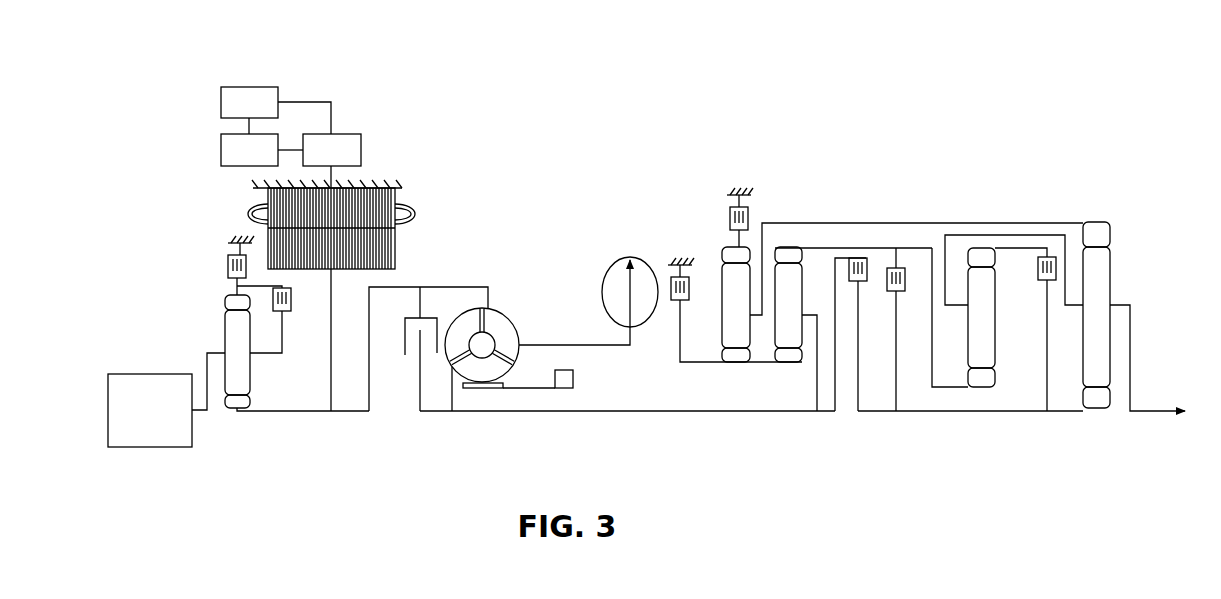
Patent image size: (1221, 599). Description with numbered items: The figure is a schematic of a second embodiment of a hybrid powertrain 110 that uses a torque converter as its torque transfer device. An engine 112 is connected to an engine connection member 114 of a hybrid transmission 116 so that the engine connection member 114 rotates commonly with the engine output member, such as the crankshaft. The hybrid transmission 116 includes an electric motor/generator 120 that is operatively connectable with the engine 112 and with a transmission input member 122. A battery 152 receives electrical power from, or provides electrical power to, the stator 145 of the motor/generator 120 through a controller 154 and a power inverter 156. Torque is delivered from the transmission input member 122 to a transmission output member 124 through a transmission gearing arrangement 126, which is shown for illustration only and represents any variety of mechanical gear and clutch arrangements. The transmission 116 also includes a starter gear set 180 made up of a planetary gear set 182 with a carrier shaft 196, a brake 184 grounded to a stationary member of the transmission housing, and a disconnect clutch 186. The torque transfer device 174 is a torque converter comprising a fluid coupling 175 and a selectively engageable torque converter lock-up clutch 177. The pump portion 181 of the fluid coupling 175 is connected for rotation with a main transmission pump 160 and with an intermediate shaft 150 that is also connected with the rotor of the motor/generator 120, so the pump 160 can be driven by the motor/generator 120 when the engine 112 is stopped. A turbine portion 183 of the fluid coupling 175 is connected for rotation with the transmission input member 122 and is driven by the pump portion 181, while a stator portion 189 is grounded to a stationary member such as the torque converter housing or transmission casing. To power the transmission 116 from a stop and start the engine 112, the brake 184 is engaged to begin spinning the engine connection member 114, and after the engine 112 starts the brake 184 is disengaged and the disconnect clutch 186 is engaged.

The hybrid powertrain 110 is at (745, 160).
The engine 112 is at (131, 424).
The engine connection member 114 is at (200, 412).
The hybrid transmission 116 is at (565, 190).
The electric motor/generator 120 is at (390, 170).
The transmission input member 122 is at (685, 413).
The transmission output member 124 is at (1145, 414).
The transmission gearing arrangement 126 is at (957, 205).
The stator 145 is at (395, 212).
The intermediate shaft 150 is at (357, 412).
The battery 152 is at (221, 148).
The controller 154 is at (240, 87).
The power inverter 156 is at (345, 134).
The main transmission pump 160 is at (632, 262).
The torque transfer device 174 is at (480, 282).
The fluid coupling 175 is at (507, 300).
The torque converter lock-up clutch 177 is at (410, 362).
The starter gear set 180 is at (160, 322).
The pump portion 181 is at (510, 318).
The planetary gear set 182 is at (225, 330).
The turbine portion 183 is at (470, 310).
The brake 184 is at (228, 268).
The disconnect clutch 186 is at (290, 297).
The stator portion 189 is at (490, 388).
The carrier shaft 196 is at (300, 412).